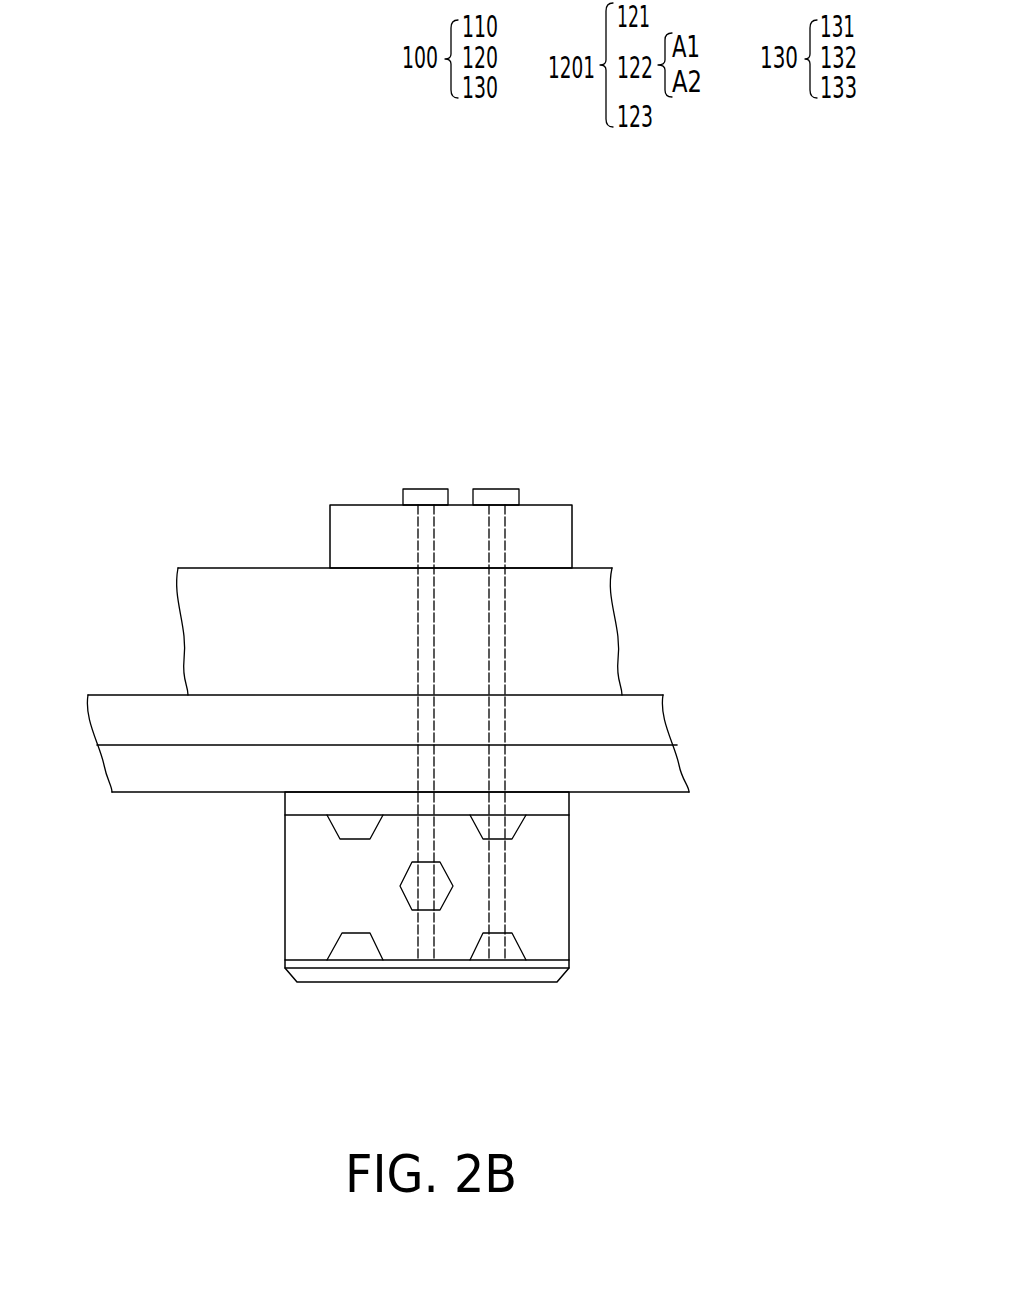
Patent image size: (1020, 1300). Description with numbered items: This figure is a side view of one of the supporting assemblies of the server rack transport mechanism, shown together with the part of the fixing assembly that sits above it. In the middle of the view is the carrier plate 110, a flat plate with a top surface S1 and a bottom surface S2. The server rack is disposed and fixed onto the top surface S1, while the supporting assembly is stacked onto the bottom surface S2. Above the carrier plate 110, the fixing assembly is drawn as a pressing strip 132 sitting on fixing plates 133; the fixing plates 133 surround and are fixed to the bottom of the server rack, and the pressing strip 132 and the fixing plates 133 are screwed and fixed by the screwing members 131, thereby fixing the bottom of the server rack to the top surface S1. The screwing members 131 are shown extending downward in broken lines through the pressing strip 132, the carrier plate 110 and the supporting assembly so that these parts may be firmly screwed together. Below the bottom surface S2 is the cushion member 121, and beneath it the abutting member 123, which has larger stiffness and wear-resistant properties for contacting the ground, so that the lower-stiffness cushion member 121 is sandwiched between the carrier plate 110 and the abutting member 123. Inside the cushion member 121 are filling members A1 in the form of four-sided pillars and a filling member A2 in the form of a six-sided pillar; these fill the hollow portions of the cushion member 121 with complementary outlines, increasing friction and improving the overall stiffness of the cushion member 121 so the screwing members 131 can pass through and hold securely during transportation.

The carrier plate 110 is at (665, 730).
The cushion member 121 is at (553, 907).
The abutting member 123 is at (557, 982).
The screwing members 131 is at (425, 489).
The pressing strip 132 is at (557, 545).
The fixing plates 133 is at (593, 652).
The filling members in a form of a four-sided pillar A1 is at (353, 828).
The filling member in a form of a six-sided pillar A2 is at (412, 892).
The top surface S1 is at (168, 695).
The bottom surface S2 is at (143, 793).